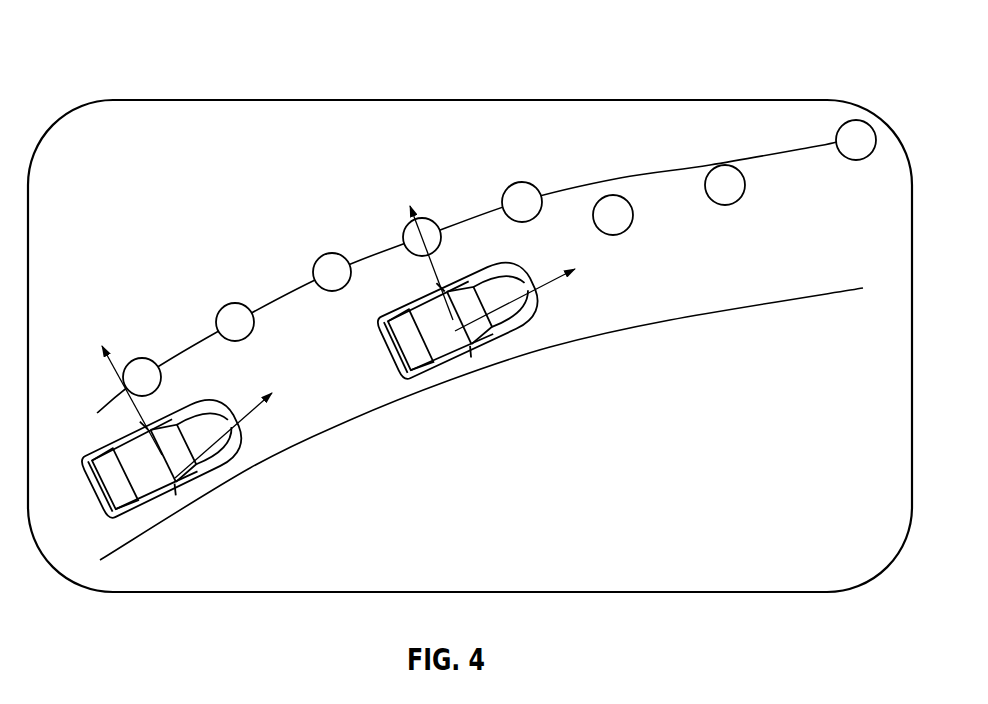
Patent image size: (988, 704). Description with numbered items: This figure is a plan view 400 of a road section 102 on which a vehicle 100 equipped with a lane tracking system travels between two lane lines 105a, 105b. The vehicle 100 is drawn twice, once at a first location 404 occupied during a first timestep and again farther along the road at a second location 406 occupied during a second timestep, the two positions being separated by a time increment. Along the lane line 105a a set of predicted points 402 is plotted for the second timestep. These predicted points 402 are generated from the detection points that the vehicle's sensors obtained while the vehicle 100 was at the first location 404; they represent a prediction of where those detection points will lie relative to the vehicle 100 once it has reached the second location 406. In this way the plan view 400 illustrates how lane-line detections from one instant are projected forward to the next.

The vehicle 100 is at (207, 393).
The road section 102 is at (793, 261).
The lane line 105a is at (812, 147).
The lane line 105b is at (768, 303).
The plan view 400 is at (108, 30).
The predicted points 402 is at (235, 302).
The first location 404 is at (222, 492).
The second location 406 is at (453, 388).